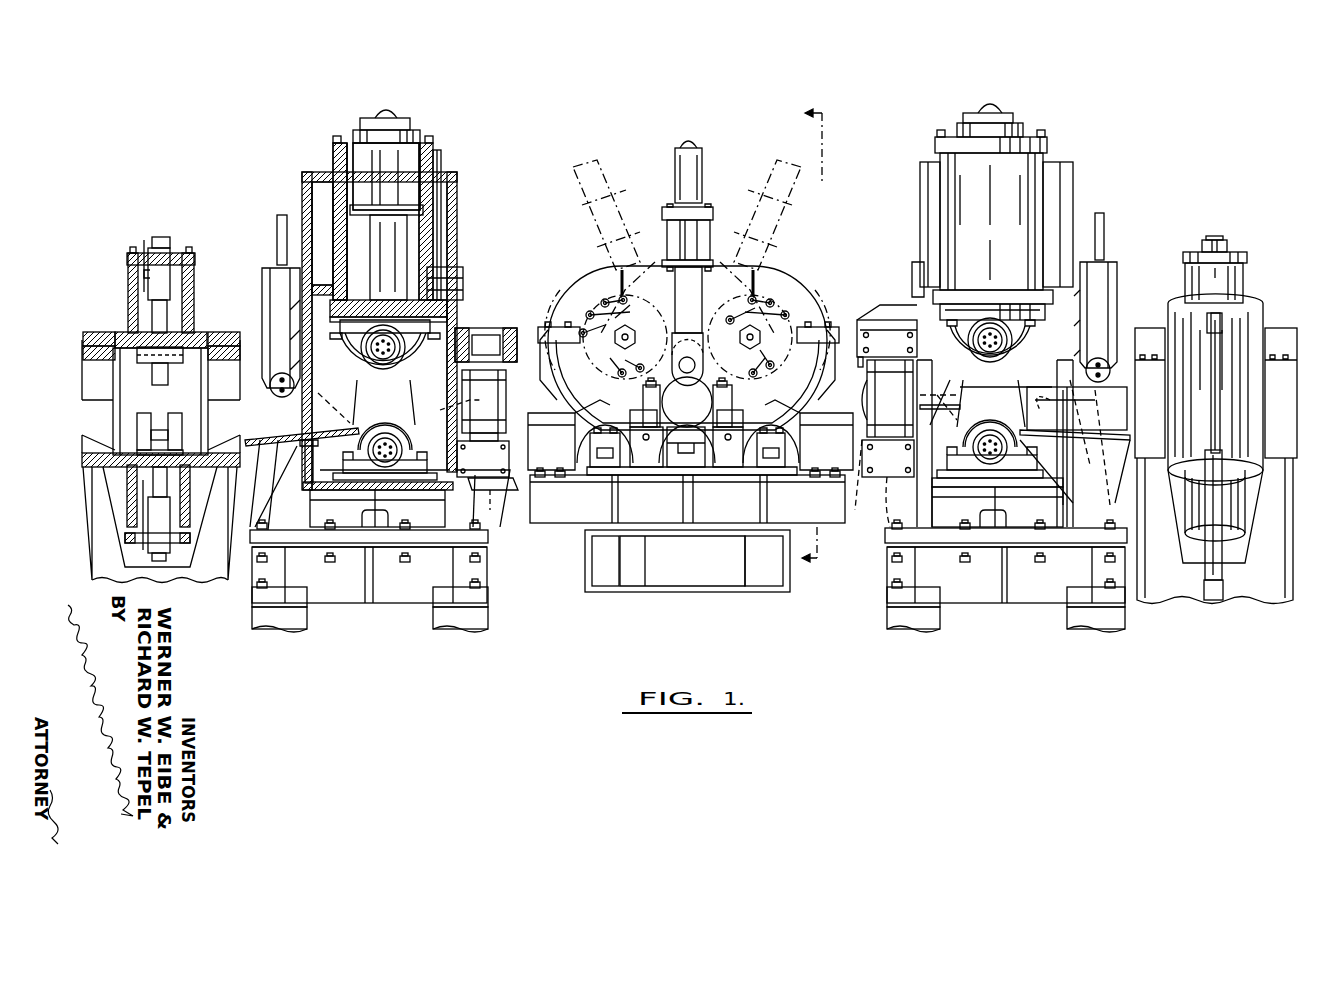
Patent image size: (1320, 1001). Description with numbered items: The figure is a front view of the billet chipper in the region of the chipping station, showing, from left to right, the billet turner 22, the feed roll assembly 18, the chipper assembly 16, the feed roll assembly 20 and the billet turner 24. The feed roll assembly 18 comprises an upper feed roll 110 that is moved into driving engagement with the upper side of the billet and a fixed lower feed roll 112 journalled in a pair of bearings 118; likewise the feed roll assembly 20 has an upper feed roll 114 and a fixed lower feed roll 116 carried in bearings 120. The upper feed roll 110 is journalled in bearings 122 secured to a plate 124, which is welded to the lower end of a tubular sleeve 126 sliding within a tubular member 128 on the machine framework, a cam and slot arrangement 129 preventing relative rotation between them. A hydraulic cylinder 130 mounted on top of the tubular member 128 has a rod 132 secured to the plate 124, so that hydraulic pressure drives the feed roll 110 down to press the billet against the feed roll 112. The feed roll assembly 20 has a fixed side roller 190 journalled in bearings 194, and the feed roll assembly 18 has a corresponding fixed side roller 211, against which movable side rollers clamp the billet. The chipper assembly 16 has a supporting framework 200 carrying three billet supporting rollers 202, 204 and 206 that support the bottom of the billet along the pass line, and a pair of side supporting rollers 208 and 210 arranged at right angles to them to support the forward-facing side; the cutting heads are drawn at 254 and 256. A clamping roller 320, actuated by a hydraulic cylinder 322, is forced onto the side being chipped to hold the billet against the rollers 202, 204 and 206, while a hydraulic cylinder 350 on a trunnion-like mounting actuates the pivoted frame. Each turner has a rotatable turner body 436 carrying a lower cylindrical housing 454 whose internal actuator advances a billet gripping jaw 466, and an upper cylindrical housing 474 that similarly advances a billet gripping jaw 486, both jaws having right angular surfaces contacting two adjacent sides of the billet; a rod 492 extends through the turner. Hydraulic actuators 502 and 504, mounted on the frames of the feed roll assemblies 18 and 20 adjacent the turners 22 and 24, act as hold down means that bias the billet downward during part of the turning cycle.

The chipper assembly 16 is at (708, 105).
The feed roll assembly 18 is at (414, 86).
The feed roll assembly 20 is at (1026, 80).
The billet turner 22 is at (158, 213).
The billet turner 24 is at (1238, 205).
The upper feed roll 110 is at (365, 385).
The lower feed roll 112 is at (385, 430).
The upper feed roll 114 is at (1022, 345).
The lower feed roll 116 is at (1005, 430).
The bearings 118 is at (363, 440).
The bearings 120 is at (963, 478).
The bearings 122 is at (366, 352).
The plate 124 is at (467, 323).
The tubular sleeve 126 is at (343, 240).
The tubular member 128 is at (340, 179).
The cam and slot arrangement 129 is at (448, 257).
The hydraulic cylinder 130 is at (410, 170).
The rod 132 is at (446, 217).
The side roller 190 is at (905, 378).
The bearings 194 is at (876, 345).
The supporting framework 200 is at (712, 502).
The billet supporting roller 202 is at (572, 493).
The billet supporting roller 204 is at (647, 447).
The billet supporting roller 206 is at (780, 464).
The side supporting roller 208 is at (645, 412).
The side supporting roller 210 is at (735, 412).
The fixed side roller 211 is at (483, 423).
The cutter disk 254 is at (790, 312).
The cutter disk 256 is at (595, 312).
The clamping roller 320 is at (692, 385).
The hydraulic cylinder 322 is at (698, 168).
The hydraulic cylinder 350 is at (473, 510).
The turner body 436 is at (1257, 318).
The lower cylindrical housing 454 is at (1243, 507).
The billet gripping jaw 466 is at (177, 413).
The upper cylindrical housing 474 is at (1240, 270).
The billet gripping jaw 486 is at (138, 362).
The rod 492 is at (1208, 552).
The hydraulic actuator 502 is at (270, 302).
The hydraulic actuator 504 is at (1110, 285).